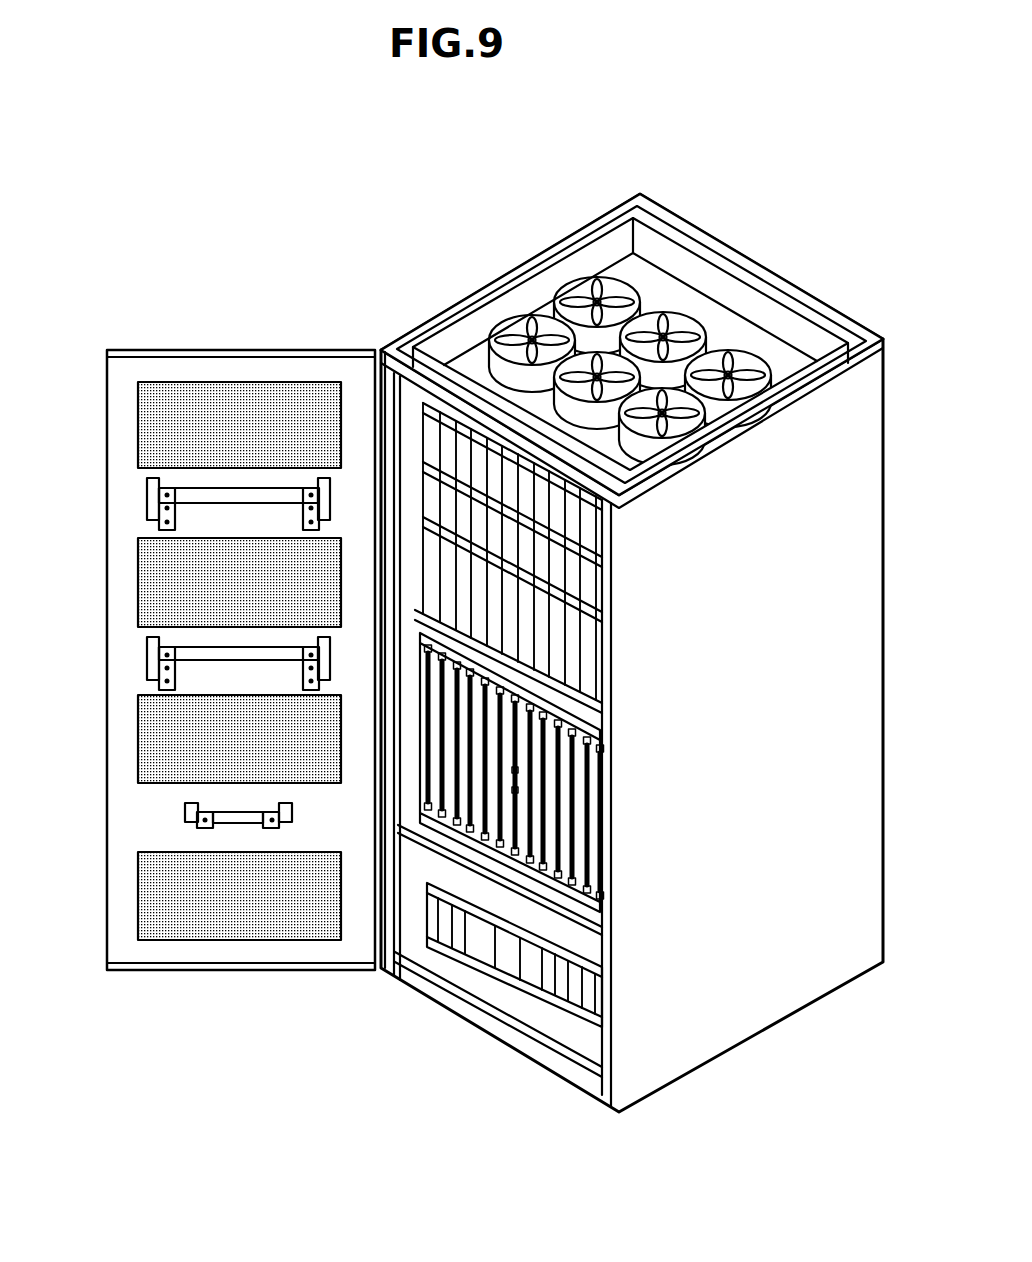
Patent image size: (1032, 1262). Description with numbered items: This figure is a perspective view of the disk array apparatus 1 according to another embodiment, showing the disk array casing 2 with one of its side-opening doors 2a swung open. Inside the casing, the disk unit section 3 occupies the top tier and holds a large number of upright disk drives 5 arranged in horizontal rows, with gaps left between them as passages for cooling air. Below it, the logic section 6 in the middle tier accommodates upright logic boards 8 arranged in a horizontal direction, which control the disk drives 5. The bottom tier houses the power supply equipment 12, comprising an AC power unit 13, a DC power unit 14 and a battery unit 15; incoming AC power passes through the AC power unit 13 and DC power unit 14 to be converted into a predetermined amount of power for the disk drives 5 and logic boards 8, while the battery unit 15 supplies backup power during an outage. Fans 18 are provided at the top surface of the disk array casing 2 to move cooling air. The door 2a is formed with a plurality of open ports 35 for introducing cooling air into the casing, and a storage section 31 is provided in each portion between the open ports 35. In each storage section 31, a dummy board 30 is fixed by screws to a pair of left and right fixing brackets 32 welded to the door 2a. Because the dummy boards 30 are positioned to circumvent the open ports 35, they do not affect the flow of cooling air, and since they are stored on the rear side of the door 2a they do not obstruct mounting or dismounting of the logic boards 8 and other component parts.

The disk array apparatus 1 is at (559, 204).
The disk array casing 2 is at (748, 1000).
The door 2a is at (262, 347).
The disk unit section 3 is at (425, 478).
The disk drives 5 is at (447, 440).
The logic section 6 is at (450, 790).
The logic boards 8 is at (418, 918).
The power supply equipment 12 is at (492, 974).
The AC power unit 13 is at (527, 975).
The DC power unit 14 is at (492, 905).
The battery unit 15 is at (567, 997).
The fans 18 is at (517, 322).
The dummy board 30 is at (233, 490).
The storage section 31 is at (182, 557).
The fixing brackets 32 is at (325, 480).
The open ports 35 is at (168, 388).